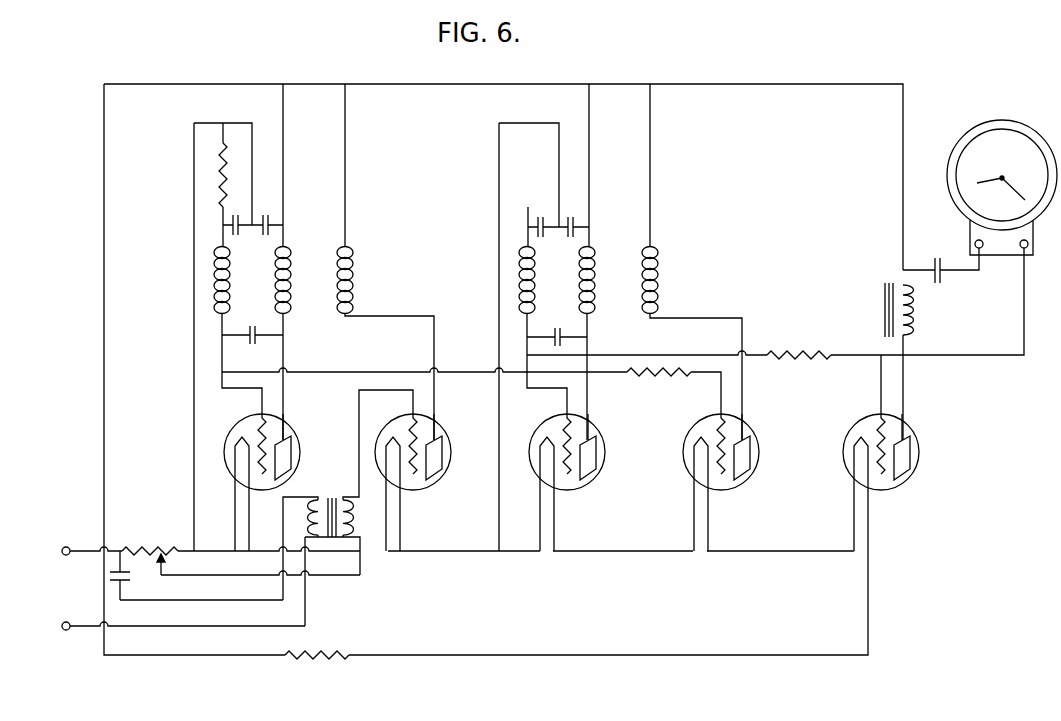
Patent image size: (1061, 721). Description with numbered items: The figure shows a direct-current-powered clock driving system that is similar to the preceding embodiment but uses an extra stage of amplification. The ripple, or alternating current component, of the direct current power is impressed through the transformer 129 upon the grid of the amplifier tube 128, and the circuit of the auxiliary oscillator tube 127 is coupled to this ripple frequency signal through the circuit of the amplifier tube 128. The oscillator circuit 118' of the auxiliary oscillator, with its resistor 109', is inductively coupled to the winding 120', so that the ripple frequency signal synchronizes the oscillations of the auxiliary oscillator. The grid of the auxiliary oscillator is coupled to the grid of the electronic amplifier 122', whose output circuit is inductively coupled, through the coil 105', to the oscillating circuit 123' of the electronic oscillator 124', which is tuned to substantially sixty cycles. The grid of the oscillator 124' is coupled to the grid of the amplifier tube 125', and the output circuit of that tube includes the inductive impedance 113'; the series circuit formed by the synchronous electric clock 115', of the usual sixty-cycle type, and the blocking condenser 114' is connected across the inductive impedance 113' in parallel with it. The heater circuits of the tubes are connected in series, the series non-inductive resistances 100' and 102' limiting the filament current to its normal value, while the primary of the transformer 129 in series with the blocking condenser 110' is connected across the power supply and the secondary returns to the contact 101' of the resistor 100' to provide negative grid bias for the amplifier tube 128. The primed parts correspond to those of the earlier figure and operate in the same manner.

The resistor 109' is at (187, 165).
The oscillator circuit 118' is at (215, 280).
The winding 120' is at (376, 280).
The oscillating circuit 123' is at (524, 280).
The coil 105' is at (685, 280).
The auxiliary oscillator tube 127 is at (312, 420).
The amplifier tube 128 is at (452, 432).
The transformer 129 is at (331, 500).
The electronic oscillator 124' is at (586, 482).
The electronic amplifier 122' is at (739, 478).
The amplifier tube 125' is at (899, 478).
The resistor 100' is at (150, 536).
The contact 101' is at (188, 564).
The blocking condenser 110' is at (150, 576).
The resistor 102' is at (328, 672).
The inductive impedance 113' is at (924, 310).
The blocking condenser 114' is at (941, 254).
The synchronous electric clock 115' is at (1002, 177).